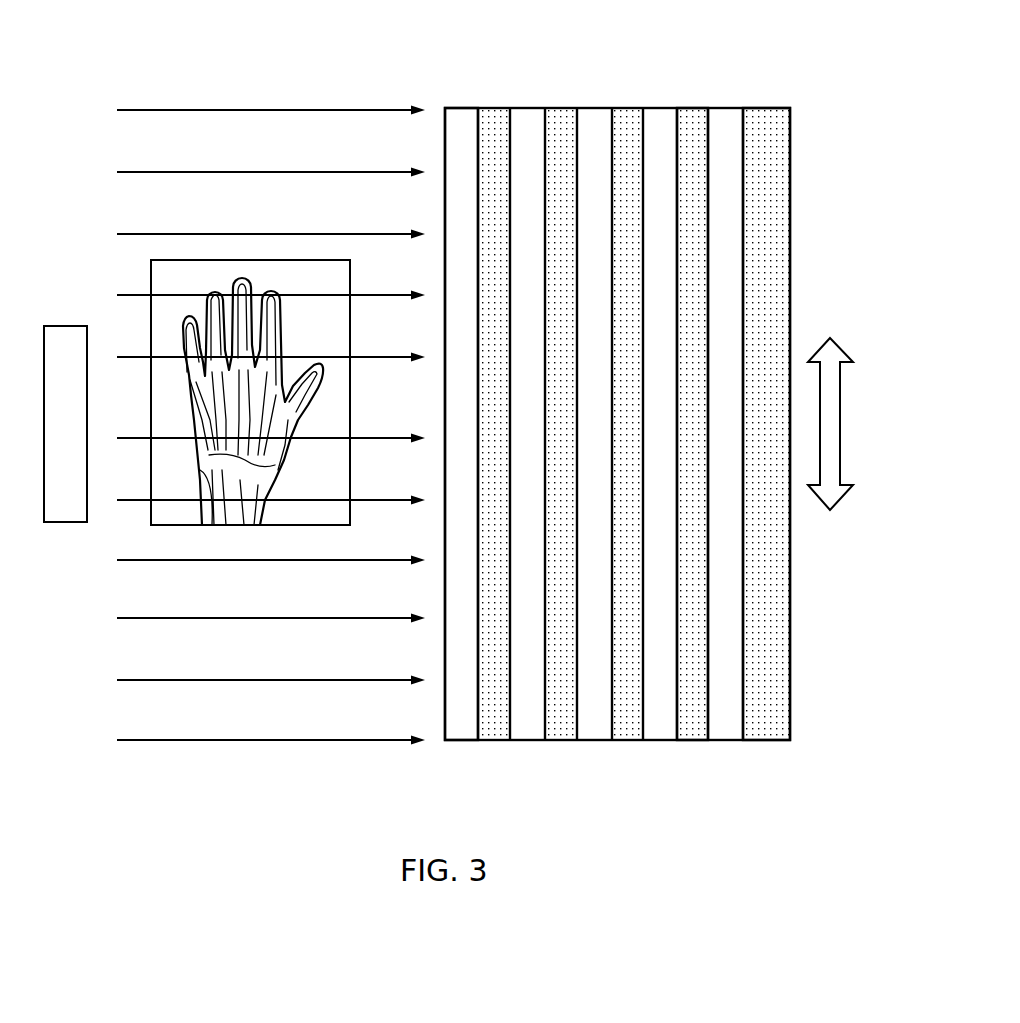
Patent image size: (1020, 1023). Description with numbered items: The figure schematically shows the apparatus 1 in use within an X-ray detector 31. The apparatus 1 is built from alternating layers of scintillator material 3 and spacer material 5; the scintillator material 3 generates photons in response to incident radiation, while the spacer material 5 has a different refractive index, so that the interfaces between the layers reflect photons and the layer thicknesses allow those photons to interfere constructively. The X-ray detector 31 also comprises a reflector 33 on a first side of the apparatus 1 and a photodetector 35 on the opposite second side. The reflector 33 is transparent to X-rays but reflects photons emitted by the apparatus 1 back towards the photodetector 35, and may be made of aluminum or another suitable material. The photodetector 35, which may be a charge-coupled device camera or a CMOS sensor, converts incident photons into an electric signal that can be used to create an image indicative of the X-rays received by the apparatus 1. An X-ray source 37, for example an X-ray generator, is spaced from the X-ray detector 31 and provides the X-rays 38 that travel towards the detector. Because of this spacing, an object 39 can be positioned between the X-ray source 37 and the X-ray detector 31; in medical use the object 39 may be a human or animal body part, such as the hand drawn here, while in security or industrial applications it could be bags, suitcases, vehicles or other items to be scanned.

The apparatus 1 is at (722, 117).
The scintillator material 3 is at (477, 745).
The spacer material 5 is at (709, 745).
The X-ray detector 31 is at (628, 68).
The reflector 33 is at (432, 706).
The photodetector 35 is at (778, 228).
The X-ray source 37 is at (64, 522).
The X-rays 38 is at (298, 233).
The object 39 is at (176, 526).